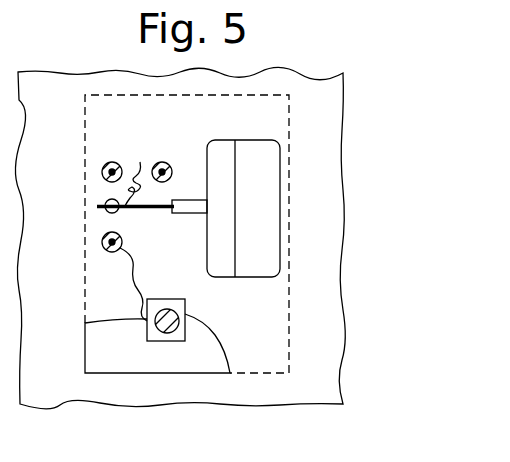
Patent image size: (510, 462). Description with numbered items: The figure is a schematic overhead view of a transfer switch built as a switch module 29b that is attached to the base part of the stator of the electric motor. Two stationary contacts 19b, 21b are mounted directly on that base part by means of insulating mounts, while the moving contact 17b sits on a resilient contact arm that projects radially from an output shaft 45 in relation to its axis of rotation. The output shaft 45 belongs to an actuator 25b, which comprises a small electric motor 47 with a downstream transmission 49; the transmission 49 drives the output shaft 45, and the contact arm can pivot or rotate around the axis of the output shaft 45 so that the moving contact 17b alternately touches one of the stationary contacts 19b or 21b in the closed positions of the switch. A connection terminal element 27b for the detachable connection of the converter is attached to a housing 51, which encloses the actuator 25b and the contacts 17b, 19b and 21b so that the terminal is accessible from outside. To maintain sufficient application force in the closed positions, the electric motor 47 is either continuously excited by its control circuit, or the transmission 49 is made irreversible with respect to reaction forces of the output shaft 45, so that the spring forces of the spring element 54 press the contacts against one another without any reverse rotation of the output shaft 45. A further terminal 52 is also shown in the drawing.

The moving contact 17b is at (105, 201).
The stationary contact 19b is at (105, 165).
The stationary contact 21b is at (103, 243).
The actuator 25b is at (280, 188).
The connection terminal element 27b is at (173, 334).
The switch module 29b is at (290, 137).
The output shaft 45 is at (187, 214).
The electric motor 47 is at (263, 267).
The transmission 49 is at (218, 268).
The housing 51 is at (107, 359).
The terminal 52 is at (165, 163).
The spring element 54 is at (140, 162).